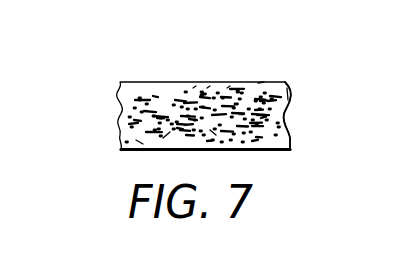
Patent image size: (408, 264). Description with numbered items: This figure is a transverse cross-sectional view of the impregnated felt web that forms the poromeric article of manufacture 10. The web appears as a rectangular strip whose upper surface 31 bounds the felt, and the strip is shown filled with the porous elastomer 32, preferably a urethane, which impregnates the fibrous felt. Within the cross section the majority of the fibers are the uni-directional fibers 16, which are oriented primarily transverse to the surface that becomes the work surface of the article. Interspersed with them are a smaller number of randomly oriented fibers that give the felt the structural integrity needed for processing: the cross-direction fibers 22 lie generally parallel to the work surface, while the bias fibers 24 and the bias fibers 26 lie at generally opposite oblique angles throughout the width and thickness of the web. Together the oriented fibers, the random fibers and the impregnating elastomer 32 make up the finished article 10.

The article of manufacture 10 is at (141, 73).
The uni-directional fibers 16 is at (227, 88).
The upper surface 31 is at (260, 82).
The porous elastomer 32 is at (289, 99).
The bias fibers 24 is at (140, 142).
The cross-direction fibers 22 is at (167, 133).
The bias fibers 26 is at (212, 132).